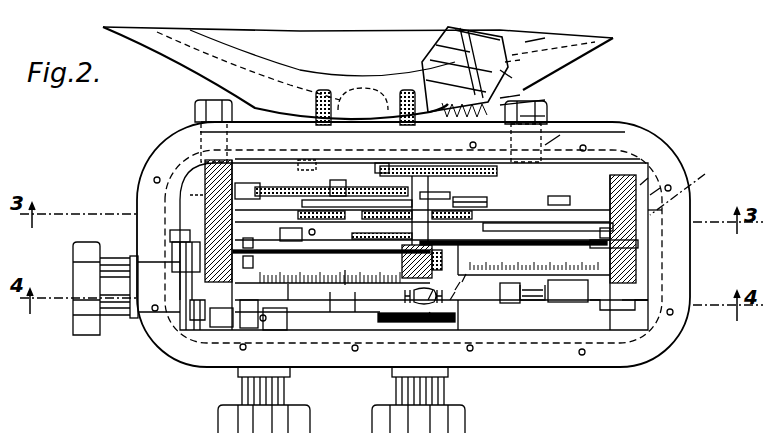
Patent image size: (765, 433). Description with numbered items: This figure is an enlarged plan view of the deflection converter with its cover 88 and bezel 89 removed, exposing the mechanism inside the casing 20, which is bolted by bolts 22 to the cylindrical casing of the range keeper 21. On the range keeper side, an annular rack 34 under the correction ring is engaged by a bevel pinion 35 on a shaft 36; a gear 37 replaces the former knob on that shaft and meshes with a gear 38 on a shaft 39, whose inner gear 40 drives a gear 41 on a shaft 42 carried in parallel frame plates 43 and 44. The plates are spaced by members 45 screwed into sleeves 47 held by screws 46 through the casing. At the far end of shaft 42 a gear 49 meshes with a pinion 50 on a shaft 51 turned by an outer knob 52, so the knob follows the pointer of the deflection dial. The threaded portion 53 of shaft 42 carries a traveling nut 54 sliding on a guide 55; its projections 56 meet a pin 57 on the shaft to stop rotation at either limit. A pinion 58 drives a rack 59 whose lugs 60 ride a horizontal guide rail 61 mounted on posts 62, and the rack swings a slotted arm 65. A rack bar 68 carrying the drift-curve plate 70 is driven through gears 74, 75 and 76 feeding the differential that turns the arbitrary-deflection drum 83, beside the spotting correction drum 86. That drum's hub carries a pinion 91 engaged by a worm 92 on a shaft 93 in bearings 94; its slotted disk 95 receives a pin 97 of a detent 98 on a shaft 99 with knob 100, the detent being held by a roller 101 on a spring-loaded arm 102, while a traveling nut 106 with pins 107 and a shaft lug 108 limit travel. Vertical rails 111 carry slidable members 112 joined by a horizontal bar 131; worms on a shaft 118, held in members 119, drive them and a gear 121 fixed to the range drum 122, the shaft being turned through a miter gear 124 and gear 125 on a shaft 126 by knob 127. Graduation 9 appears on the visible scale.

The casing 20 is at (138, 147).
The range keeper 21 is at (200, 50).
The bolts 22 is at (402, 108).
The annular rack 34 is at (445, 42).
The bevel pinion 35 is at (525, 42).
The shaft 36 is at (505, 74).
The gear 37 is at (510, 98).
The gear 38 is at (547, 101).
The shaft 39 is at (545, 116).
The gear 40 is at (545, 145).
The gear 41 is at (383, 165).
The shaft 42 is at (410, 203).
The frame plate 43 is at (694, 183).
The frame plate 44 is at (622, 305).
The spacing members 45 is at (637, 281).
The screws 46 is at (640, 185).
The sleeves 47 is at (650, 195).
The gear 49 is at (428, 300).
The pinion 50 is at (425, 320).
The shaft 51 is at (407, 360).
The knob 52 is at (455, 415).
The screw threaded portion 53 is at (441, 290).
The traveling nut 54 is at (462, 282).
The guide 55 is at (450, 300).
The projection 56 is at (455, 290).
The pin 57 is at (386, 305).
The pinion 58 is at (452, 197).
The rack 59 is at (322, 122).
The lugs 60 is at (287, 194).
The guide rail 61 is at (310, 200).
The posts 62 is at (476, 218).
The arm 65 is at (338, 181).
The rack bar 68 is at (266, 196).
The plate 70 is at (341, 198).
The gear 74 is at (380, 245).
The gear 75 is at (582, 232).
The gear 76 is at (522, 230).
The drum 83 is at (622, 268).
The spotting correction drum 86 is at (593, 302).
The cover 88 is at (687, 425).
The bezel 89 is at (645, 425).
The pinion 91 is at (546, 295).
The worm 92 is at (550, 304).
The shaft 93 is at (345, 270).
The bearings 94 is at (520, 305).
The disk 95 is at (201, 315).
The pin 97 is at (188, 305).
The detent 98 is at (193, 312).
The shaft 99 is at (150, 313).
The knob 100 is at (83, 325).
The roller 101 is at (170, 236).
The arm 102 is at (172, 247).
The traveling nut 106 is at (256, 326).
The pins 107 is at (243, 264).
The lug 108 is at (267, 319).
The vertical guides or rails 111 is at (586, 202).
The slidable member 112 is at (302, 160).
The shaft 118 is at (207, 205).
The members 119 is at (637, 247).
The gear 121 is at (332, 292).
The drum 122 is at (355, 292).
The miter gear 124 is at (210, 167).
The gear 125 is at (295, 245).
The shaft 126 is at (243, 380).
The knob 127 is at (218, 418).
The horizontal bar 131 is at (549, 198).
The scale 9 is at (331, 266).